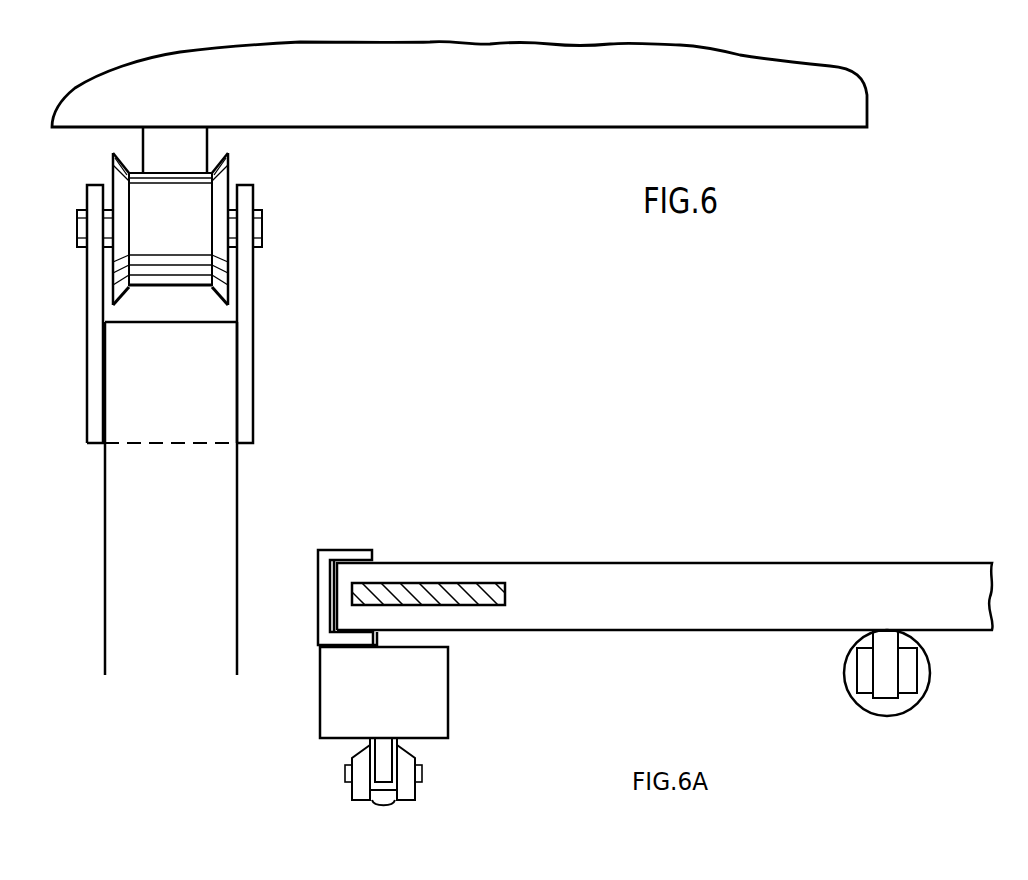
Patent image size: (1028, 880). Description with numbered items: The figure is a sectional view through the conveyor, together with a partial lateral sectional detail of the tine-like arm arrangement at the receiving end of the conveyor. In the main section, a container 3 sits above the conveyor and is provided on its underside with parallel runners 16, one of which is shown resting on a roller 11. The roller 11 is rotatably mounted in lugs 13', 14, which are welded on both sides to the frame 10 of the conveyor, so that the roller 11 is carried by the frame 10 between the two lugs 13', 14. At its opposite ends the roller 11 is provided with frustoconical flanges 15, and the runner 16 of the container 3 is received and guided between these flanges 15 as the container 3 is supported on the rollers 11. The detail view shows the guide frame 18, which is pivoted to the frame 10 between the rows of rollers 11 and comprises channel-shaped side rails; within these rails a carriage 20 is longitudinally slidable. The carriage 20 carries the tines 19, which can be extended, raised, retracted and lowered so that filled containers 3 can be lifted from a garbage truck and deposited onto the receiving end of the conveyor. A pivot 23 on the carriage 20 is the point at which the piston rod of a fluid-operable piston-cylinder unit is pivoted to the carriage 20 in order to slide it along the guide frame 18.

In FIG. 6, the container 3 is at (364, 97).
In FIG. 6, the frame 10 is at (189, 358).
In FIG. 6, the roller 11 is at (178, 218).
In FIG. 6, the lug 13' is at (263, 314).
In FIG. 6, the lug 14 is at (95, 380).
In FIG. 6, the frustoconical flange 15 is at (118, 178).
In FIG. 6, the runner 16 is at (186, 158).
In FIG. 6A, the guide frame 18 is at (325, 603).
In FIG. 6A, the tine 19 is at (423, 590).
In FIG. 6A, the carriage 20 is at (572, 577).
In FIG. 6A, the pivot 23 is at (888, 672).